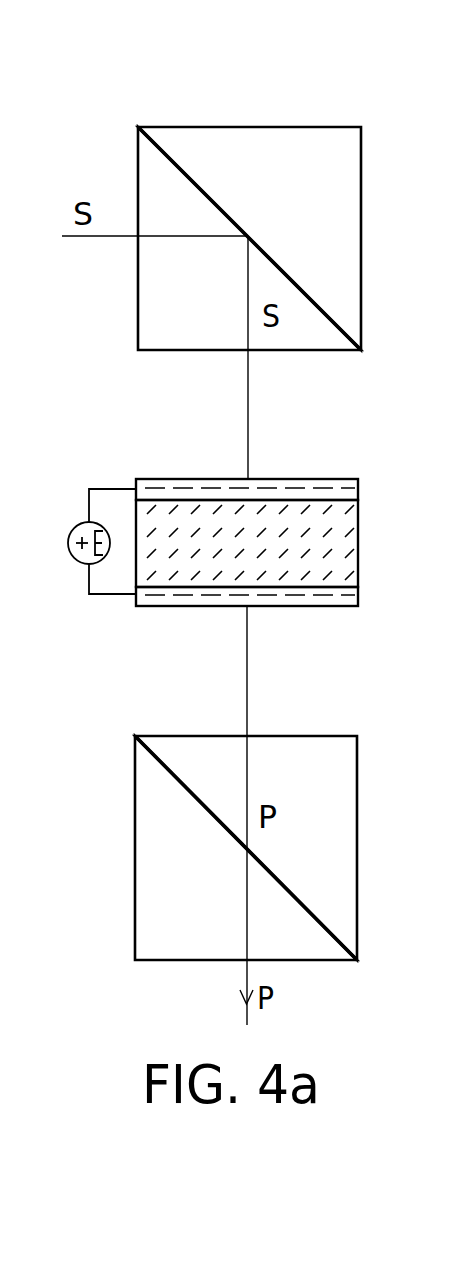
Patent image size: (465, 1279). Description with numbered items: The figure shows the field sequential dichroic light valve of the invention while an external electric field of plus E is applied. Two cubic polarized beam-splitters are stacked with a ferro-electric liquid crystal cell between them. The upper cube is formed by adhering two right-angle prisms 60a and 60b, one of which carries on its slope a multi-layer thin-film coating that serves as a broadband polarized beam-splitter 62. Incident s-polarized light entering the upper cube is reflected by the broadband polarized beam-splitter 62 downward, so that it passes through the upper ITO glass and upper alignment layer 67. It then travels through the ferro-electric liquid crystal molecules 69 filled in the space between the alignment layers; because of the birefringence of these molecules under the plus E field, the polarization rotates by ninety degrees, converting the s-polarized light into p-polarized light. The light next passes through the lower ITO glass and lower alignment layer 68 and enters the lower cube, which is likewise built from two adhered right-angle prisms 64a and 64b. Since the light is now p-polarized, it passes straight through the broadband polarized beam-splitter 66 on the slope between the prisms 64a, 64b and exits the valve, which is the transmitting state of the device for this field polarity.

The prism 60a is at (158, 303).
The prism 60b is at (342, 194).
The broadband polarized beam-splitter 62 is at (187, 168).
The upper ITO glass and upper alignment layer 67 is at (340, 487).
The ferro-electric liquid crystal molecules 69 is at (338, 546).
The lower ITO glass and lower alignment layer 68 is at (338, 594).
The prism 64a is at (337, 792).
The prism 64b is at (153, 890).
The broadband polarized beam-splitter 66 is at (182, 780).